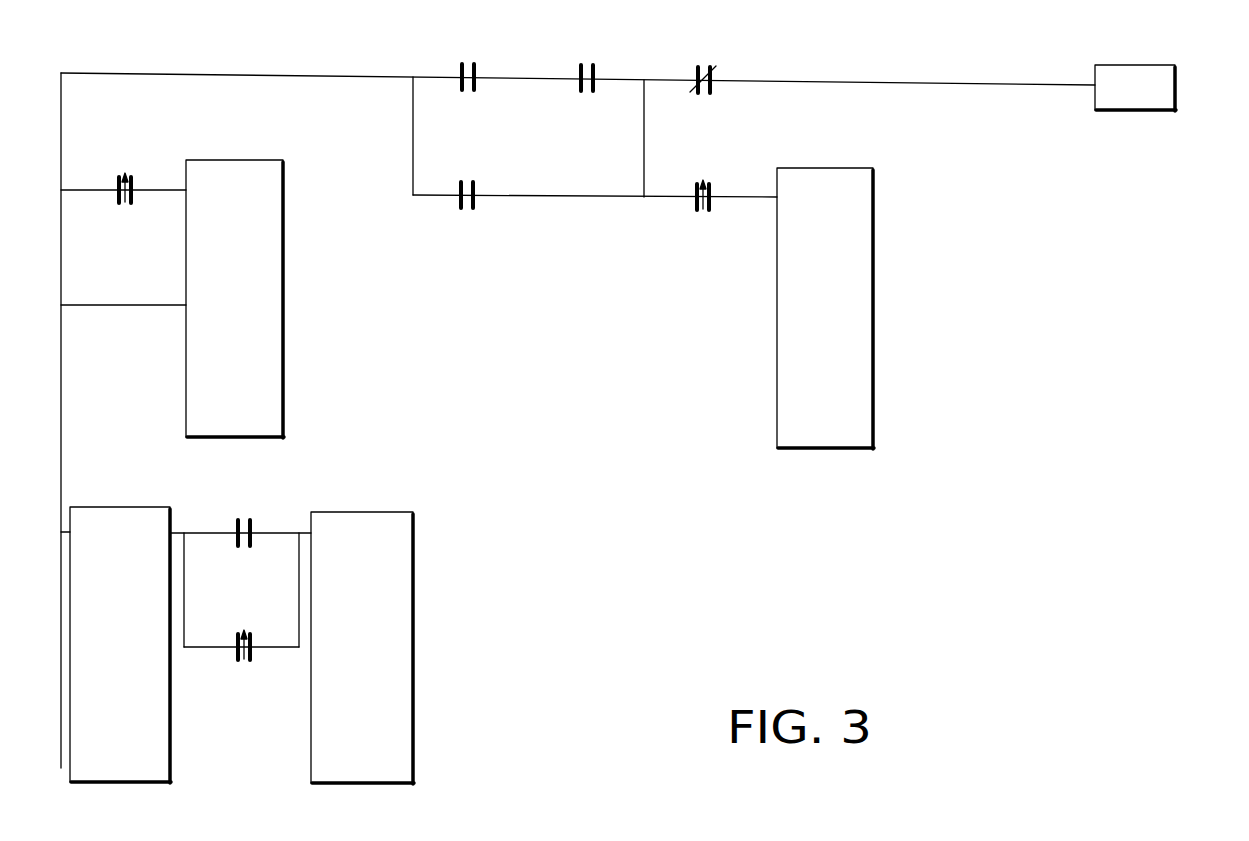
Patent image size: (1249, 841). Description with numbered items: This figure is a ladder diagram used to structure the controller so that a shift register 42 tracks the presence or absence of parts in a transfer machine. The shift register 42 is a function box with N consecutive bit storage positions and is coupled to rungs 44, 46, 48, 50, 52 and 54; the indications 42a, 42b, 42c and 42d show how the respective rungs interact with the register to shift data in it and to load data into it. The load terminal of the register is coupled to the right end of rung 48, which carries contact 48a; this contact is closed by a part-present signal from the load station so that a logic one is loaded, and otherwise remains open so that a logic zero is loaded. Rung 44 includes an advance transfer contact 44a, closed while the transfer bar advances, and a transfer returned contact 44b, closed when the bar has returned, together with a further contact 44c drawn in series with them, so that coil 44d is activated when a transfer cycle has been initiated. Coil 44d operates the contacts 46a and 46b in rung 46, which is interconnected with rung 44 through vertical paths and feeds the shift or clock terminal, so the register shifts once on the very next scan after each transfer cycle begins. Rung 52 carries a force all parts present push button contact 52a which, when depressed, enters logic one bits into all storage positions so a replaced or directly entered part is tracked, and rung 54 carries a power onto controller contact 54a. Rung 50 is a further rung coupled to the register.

The shift register 42 is at (472, 472).
The shift register interaction point 42a is at (775, 350).
The shift register interaction point 42b is at (283, 373).
The shift register interaction point 42c is at (100, 507).
The shift register interaction point 42d is at (375, 512).
The rung 44 is at (292, 74).
The advance transfer contact 44a is at (474, 68).
The transfer returned contact 44b is at (592, 67).
The transfer advanced contact 44c is at (710, 67).
The coil 44d is at (1113, 110).
The rung 46 is at (570, 197).
The contact 46a is at (470, 184).
The contact 46b is at (712, 186).
The rung 48 is at (83, 190).
The contact 48a is at (134, 182).
The rung 50 is at (112, 305).
The rung 52 is at (200, 532).
The force all parts present push button contact 52a is at (250, 520).
The rung 54 is at (218, 648).
The power onto controller contact 54a is at (251, 662).